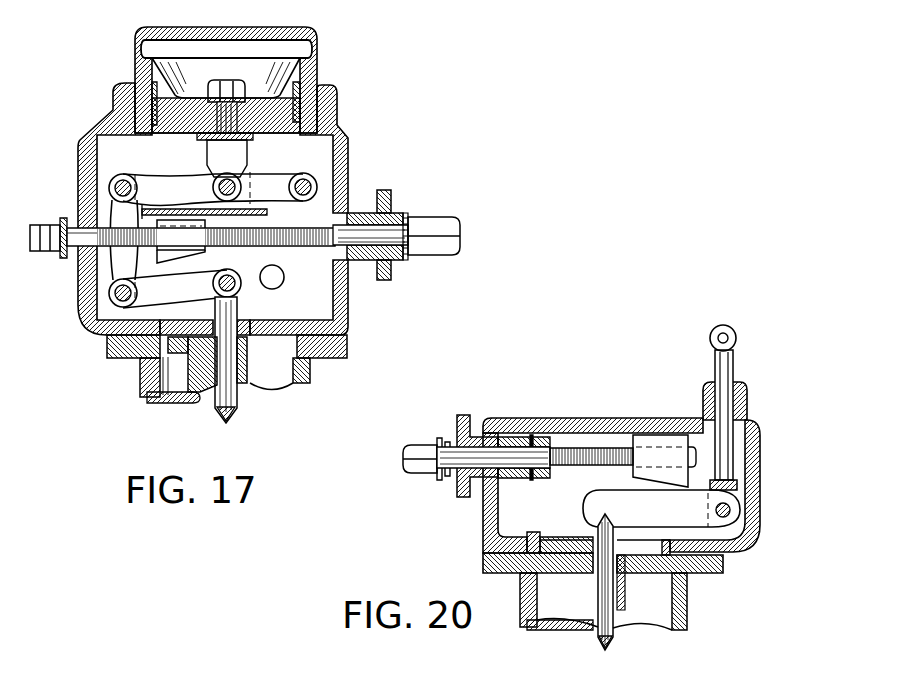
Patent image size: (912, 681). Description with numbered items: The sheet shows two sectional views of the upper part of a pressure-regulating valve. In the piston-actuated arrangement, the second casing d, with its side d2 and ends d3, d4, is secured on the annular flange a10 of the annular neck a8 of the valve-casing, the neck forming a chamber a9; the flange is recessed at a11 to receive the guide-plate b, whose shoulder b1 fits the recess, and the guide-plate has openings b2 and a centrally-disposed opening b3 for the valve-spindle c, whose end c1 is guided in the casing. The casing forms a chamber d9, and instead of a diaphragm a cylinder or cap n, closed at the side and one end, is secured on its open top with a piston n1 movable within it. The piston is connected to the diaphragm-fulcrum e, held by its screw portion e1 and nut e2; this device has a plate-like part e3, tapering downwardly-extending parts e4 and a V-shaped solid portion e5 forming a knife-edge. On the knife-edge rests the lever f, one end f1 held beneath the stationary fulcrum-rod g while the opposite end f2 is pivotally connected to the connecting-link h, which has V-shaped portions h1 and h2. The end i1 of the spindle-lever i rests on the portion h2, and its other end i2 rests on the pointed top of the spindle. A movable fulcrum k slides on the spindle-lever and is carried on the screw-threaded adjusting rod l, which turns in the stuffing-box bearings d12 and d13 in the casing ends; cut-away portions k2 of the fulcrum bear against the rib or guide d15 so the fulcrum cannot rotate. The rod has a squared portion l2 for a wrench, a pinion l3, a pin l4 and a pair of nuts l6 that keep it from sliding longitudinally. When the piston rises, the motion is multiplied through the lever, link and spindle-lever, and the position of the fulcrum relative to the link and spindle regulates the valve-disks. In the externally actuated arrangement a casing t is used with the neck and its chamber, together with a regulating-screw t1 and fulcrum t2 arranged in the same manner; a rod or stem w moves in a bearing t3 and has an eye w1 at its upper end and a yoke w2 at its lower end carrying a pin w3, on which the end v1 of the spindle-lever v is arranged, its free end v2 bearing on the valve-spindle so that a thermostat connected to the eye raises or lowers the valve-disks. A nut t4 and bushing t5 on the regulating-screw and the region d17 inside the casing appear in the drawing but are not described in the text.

In FIG. 17, the cylinder or cap n is at (320, 44).
In FIG. 17, the piston n1 is at (186, 87).
In FIG. 17, the screw portion e1 is at (227, 79).
In FIG. 17, the nut e2 is at (242, 81).
In FIG. 17, the diaphragm-fulcrum e is at (183, 154).
In FIG. 17, the plate-like part e3 is at (276, 151).
In FIG. 17, the downwardly-extending parts e4 is at (225, 155).
In FIG. 17, the solid portion e5 is at (238, 184).
In FIG. 17, the second casing d is at (206, 209).
In FIG. 17, the side of casing d2 is at (100, 156).
In FIG. 17, the end of casing d3 is at (346, 167).
In FIG. 17, the end of casing d4 is at (97, 176).
In FIG. 17, the stuffing-box or bearing d13 is at (78, 208).
In FIG. 17, the rib or guide d15 is at (268, 212).
In FIG. 17, the chamber d17 is at (308, 262).
In FIG. 17, the chamber d9 is at (312, 290).
In FIG. 17, the stuffing-box or bearing d12 is at (358, 258).
In FIG. 17, the lever f is at (213, 188).
In FIG. 17, the end of lever f1 is at (296, 173).
In FIG. 17, the opposite end of lever f2 is at (128, 184).
In FIG. 17, the stationary fulcrum-rod g is at (306, 175).
In FIG. 17, the connecting-link h is at (118, 262).
In FIG. 17, the V-shaped portion h1 is at (121, 176).
In FIG. 17, the V-shaped portion h2 is at (118, 295).
In FIG. 17, the spindle-lever i is at (175, 285).
In FIG. 17, the end of spindle-lever i1 is at (114, 220).
In FIG. 17, the opposite end of spindle-lever i2 is at (264, 270).
In FIG. 17, the movable fulcrum k is at (181, 256).
In FIG. 17, the cut-away portions k2 is at (181, 235).
In FIG. 17, the rod forming adjusting-screw l is at (383, 235).
In FIG. 17, the squared portion l2 is at (455, 220).
In FIG. 17, the pinion l3 is at (388, 192).
In FIG. 17, the pin l4 is at (410, 230).
In FIG. 17, the pair of nuts l6 is at (55, 253).
In FIG. 17, the valve-spindle c is at (220, 414).
In FIG. 20, the valve-spindle c is at (598, 638).
In FIG. 17, the end of valve-spindle c1 is at (238, 313).
In FIG. 20, the end of valve-spindle c1 is at (614, 535).
In FIG. 17, the annular neck a8 is at (311, 377).
In FIG. 20, the annular neck a8 is at (687, 608).
In FIG. 17, the chamber a9 is at (187, 393).
In FIG. 20, the chamber a9 is at (560, 606).
In FIG. 17, the annular flange a10 is at (347, 355).
In FIG. 20, the annular flange a10 is at (723, 568).
In FIG. 17, the recess a11 is at (347, 337).
In FIG. 17, the guide-plate b is at (205, 345).
In FIG. 20, the guide-plate b is at (572, 553).
In FIG. 17, the shoulder b1 is at (283, 342).
In FIG. 20, the shoulder b1 is at (670, 553).
In FIG. 17, the openings b2 is at (221, 366).
In FIG. 17, the centrally-disposed opening b3 is at (247, 392).
In FIG. 20, the centrally-disposed opening b3 is at (623, 586).
In FIG. 20, the casing t is at (483, 530).
In FIG. 20, the regulating-screw t1 is at (567, 467).
In FIG. 20, the fulcrum t2 is at (660, 440).
In FIG. 20, the bearing t3 is at (748, 401).
In FIG. 20, the nut t4 is at (447, 480).
In FIG. 20, the bushing t5 is at (520, 478).
In FIG. 20, the rod or stem w is at (735, 376).
In FIG. 20, the eye w1 is at (737, 339).
In FIG. 20, the yoke w2 is at (740, 491).
In FIG. 20, the pin w3 is at (732, 511).
In FIG. 20, the spindle-lever v is at (661, 508).
In FIG. 20, the end of spindle-lever v1 is at (733, 520).
In FIG. 20, the free end of spindle-lever v2 is at (598, 502).